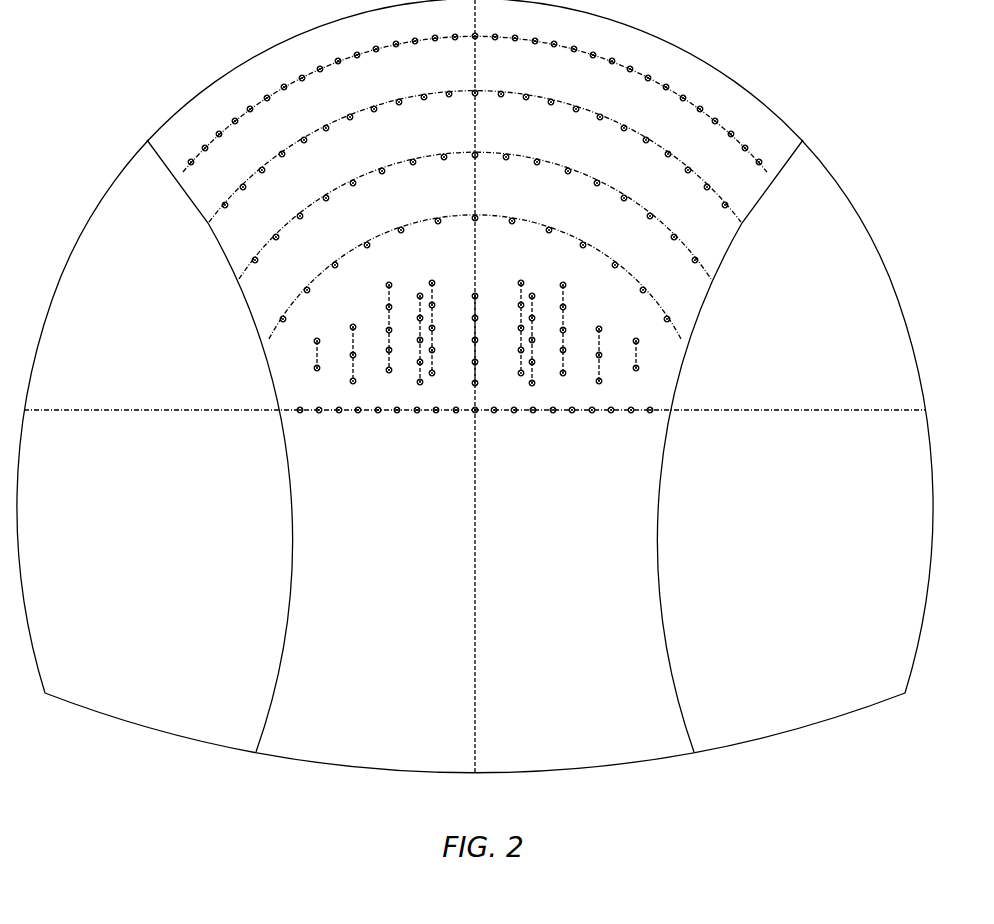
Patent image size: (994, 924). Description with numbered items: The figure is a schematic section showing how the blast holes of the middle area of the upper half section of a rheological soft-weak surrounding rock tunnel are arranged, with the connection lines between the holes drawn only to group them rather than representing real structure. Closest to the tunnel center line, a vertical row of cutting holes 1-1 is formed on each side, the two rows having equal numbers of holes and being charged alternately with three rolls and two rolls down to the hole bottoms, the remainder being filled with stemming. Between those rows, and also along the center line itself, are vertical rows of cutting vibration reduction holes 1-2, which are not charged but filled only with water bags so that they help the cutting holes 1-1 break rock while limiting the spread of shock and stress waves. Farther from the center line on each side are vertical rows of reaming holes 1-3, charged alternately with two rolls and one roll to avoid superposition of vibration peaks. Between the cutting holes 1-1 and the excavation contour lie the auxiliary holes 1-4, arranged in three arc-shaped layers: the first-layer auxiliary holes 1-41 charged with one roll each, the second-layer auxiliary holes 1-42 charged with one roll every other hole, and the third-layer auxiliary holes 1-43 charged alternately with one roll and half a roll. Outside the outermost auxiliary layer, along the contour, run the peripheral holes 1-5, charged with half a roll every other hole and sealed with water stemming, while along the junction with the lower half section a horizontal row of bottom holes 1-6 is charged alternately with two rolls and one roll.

The cutting holes 1-1 is at (420, 382).
The cutting vibration reduction holes 1-2 is at (432, 283).
The reaming holes 1-3 is at (636, 368).
The auxiliary holes 1-4 is at (475, 211).
The first-layer auxiliary holes 1-41 is at (514, 178).
The second-layer auxiliary holes 1-42 is at (514, 178).
The third-layer auxiliary holes 1-43 is at (514, 178).
The peripheral holes 1-5 is at (574, 49).
The bottom holes 1-6 is at (340, 410).